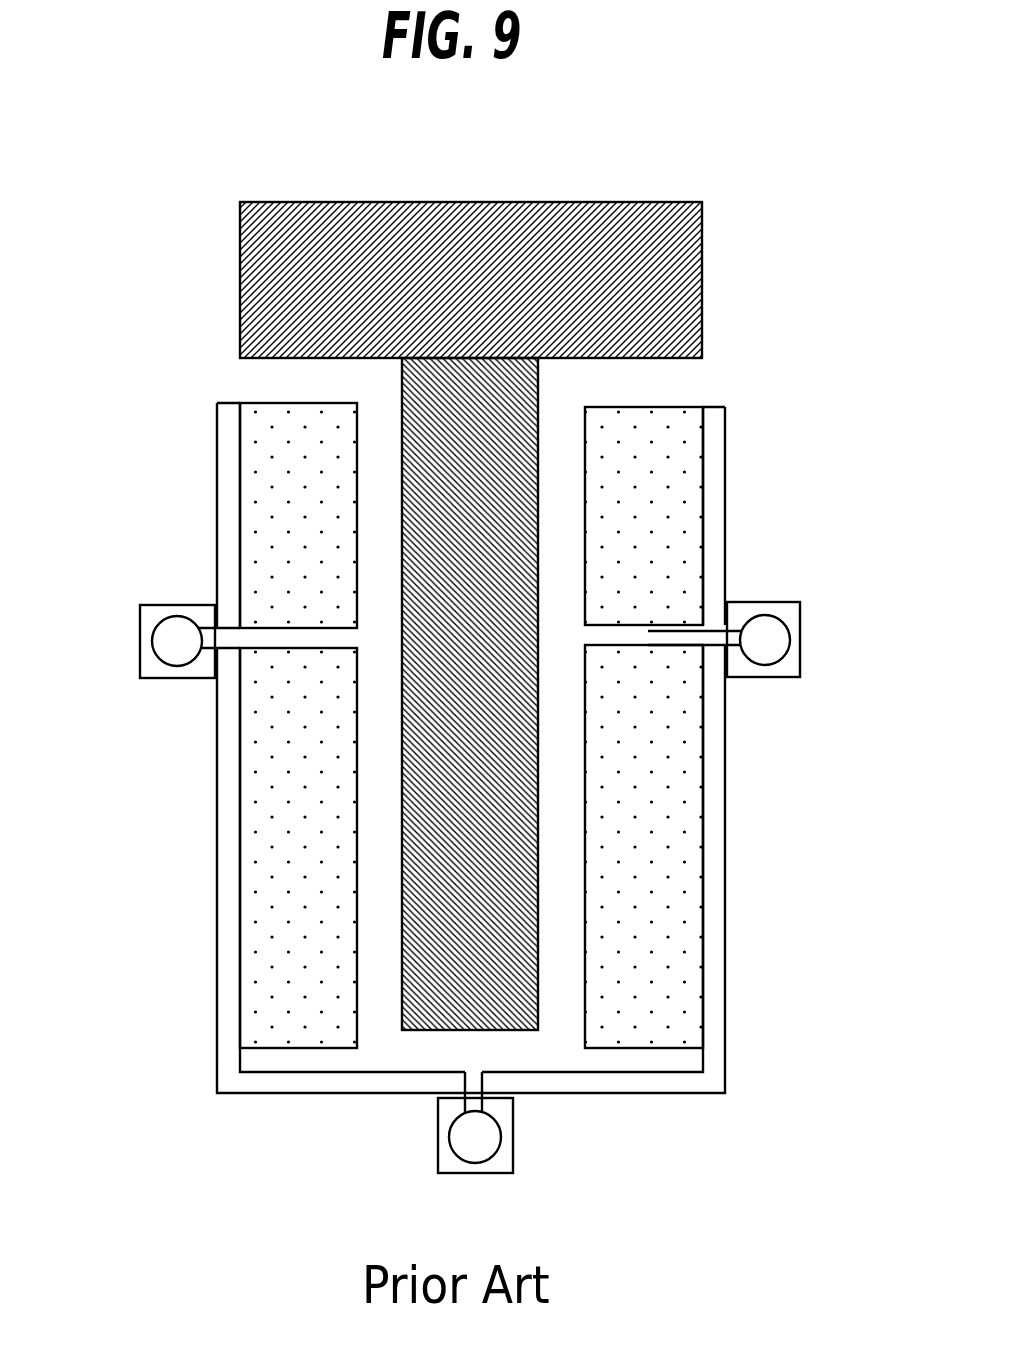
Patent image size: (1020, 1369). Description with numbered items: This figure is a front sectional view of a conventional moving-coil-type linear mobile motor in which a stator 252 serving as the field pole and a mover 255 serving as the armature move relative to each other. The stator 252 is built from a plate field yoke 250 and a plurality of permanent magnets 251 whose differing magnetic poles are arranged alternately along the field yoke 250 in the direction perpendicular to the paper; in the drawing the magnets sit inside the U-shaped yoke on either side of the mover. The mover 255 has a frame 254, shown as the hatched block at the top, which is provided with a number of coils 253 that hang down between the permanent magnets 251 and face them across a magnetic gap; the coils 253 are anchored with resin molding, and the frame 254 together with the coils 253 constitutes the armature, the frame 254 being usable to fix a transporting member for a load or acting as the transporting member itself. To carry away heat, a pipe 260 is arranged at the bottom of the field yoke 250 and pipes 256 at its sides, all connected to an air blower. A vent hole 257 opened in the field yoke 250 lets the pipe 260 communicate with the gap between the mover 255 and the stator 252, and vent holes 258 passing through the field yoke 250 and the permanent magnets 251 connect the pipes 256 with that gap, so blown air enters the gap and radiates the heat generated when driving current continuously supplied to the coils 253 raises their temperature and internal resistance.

The plate field yoke 250 is at (713, 750).
The permanent magnets 251 is at (273, 765).
The stator 252 is at (471, 804).
The coils 253 is at (487, 410).
The frame 254 is at (270, 283).
The mover 255 is at (460, 570).
The pipes 256 is at (140, 652).
The vent hole 257 is at (467, 1079).
The vent holes 258 is at (257, 640).
The pipe 260 is at (507, 1157).